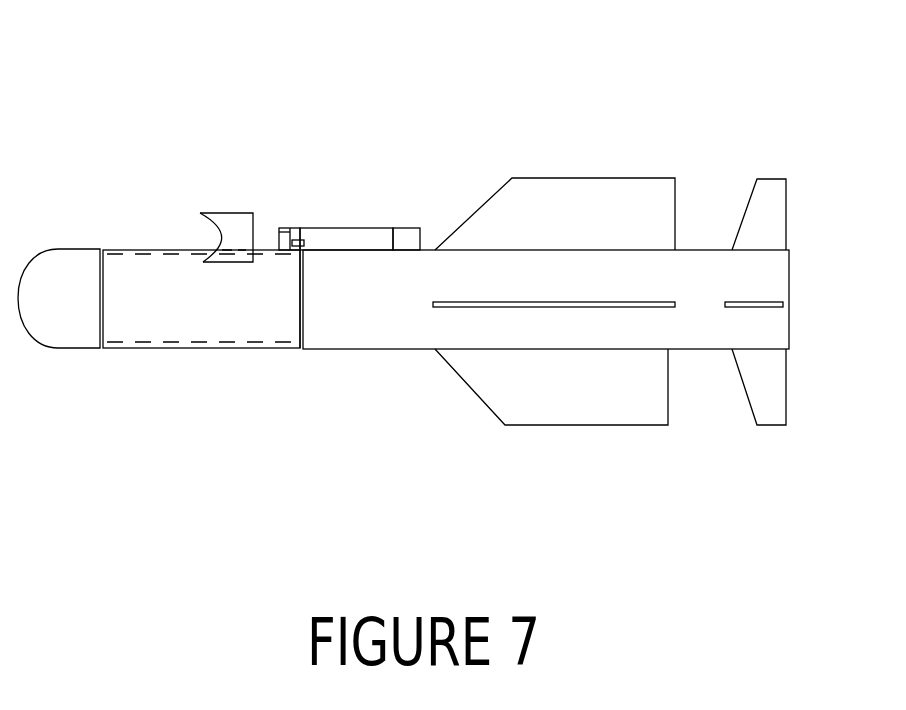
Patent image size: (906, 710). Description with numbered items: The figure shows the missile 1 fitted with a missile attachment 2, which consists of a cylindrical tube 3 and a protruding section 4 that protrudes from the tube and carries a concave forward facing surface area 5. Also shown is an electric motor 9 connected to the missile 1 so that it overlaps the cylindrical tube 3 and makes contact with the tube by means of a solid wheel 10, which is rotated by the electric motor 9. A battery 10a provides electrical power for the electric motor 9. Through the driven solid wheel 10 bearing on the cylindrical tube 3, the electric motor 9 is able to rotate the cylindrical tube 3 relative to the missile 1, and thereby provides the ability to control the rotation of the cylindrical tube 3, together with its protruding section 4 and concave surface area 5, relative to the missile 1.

The missile 1 is at (385, 320).
The missile attachment 2 is at (150, 325).
The cylindrical tube 3 is at (227, 338).
The protruding section 4 is at (176, 172).
The concave forward facing surface area 5 is at (217, 242).
The electric motor 9 is at (335, 235).
The solid wheel 10 is at (287, 237).
The battery 10a is at (413, 235).